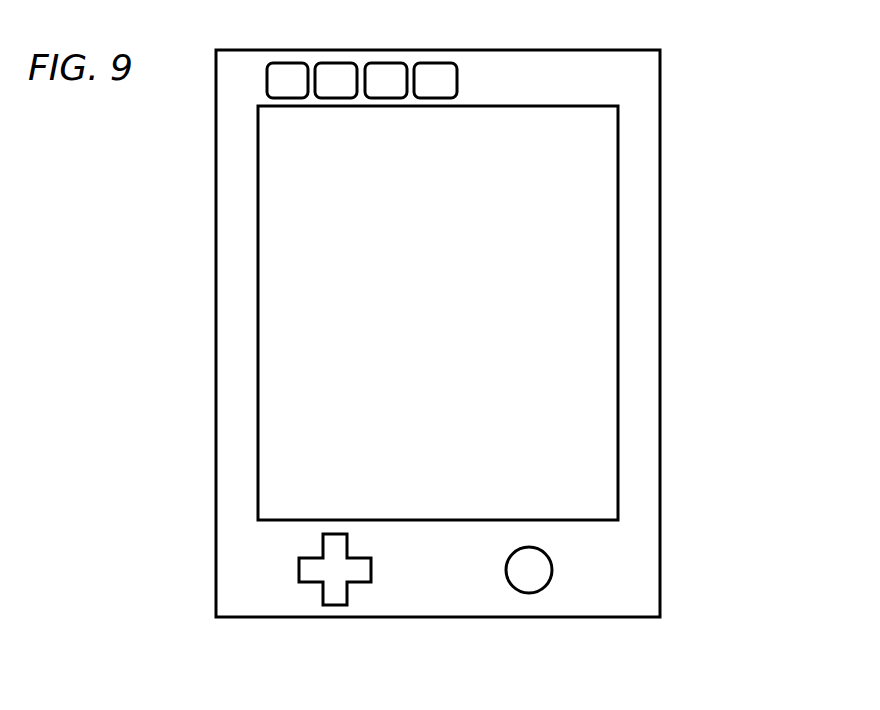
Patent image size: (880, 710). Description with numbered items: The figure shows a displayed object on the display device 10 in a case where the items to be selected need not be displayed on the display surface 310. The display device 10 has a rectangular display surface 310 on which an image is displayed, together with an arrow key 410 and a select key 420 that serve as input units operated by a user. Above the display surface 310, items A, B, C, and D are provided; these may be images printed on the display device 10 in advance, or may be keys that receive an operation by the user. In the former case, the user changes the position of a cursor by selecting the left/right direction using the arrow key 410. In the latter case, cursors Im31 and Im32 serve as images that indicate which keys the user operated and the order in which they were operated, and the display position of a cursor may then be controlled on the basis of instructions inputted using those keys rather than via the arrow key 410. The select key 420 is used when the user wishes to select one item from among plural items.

The display device 10 is at (704, 114).
The display surface 310 is at (593, 428).
The cursor Im31 is at (288, 127).
The cursor Im32 is at (383, 119).
The arrow key 410 is at (347, 597).
The select key 420 is at (535, 582).